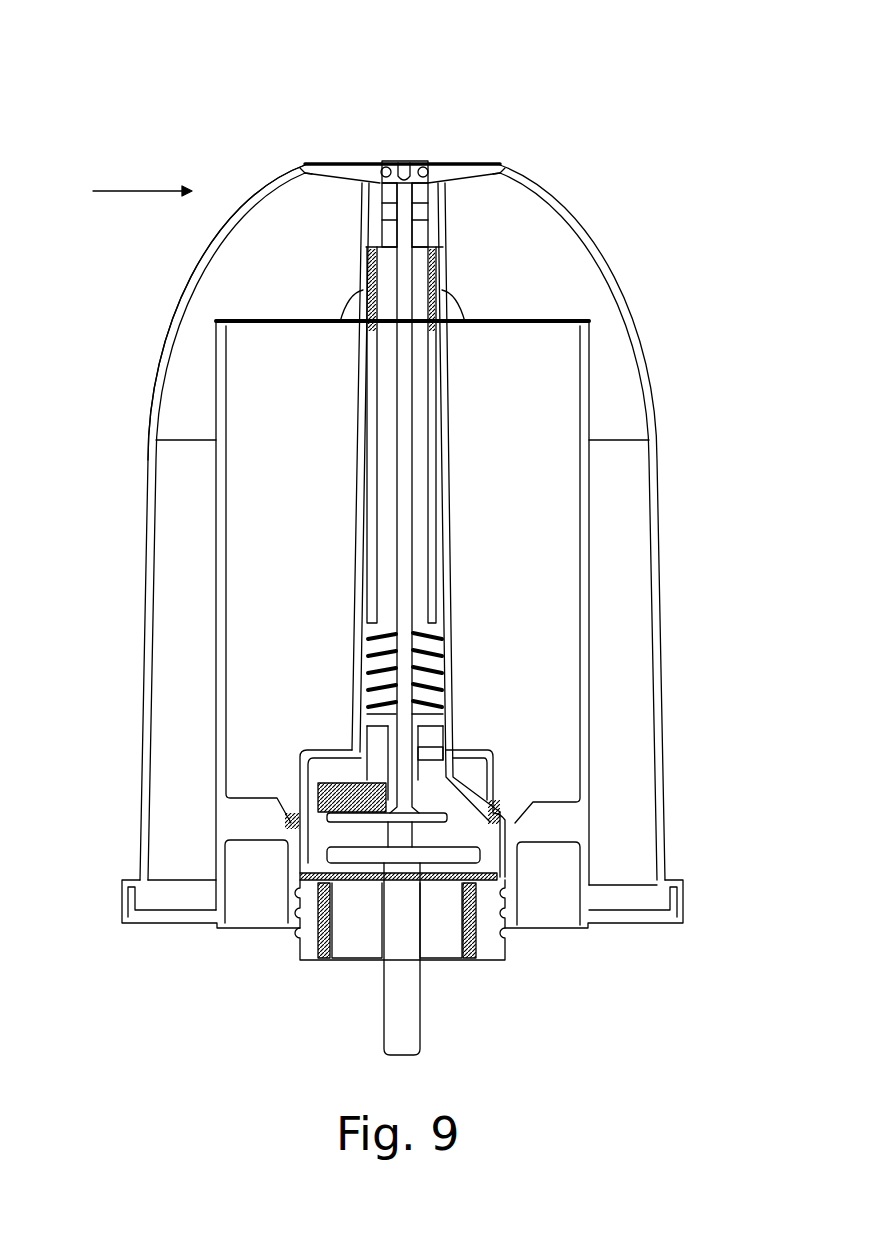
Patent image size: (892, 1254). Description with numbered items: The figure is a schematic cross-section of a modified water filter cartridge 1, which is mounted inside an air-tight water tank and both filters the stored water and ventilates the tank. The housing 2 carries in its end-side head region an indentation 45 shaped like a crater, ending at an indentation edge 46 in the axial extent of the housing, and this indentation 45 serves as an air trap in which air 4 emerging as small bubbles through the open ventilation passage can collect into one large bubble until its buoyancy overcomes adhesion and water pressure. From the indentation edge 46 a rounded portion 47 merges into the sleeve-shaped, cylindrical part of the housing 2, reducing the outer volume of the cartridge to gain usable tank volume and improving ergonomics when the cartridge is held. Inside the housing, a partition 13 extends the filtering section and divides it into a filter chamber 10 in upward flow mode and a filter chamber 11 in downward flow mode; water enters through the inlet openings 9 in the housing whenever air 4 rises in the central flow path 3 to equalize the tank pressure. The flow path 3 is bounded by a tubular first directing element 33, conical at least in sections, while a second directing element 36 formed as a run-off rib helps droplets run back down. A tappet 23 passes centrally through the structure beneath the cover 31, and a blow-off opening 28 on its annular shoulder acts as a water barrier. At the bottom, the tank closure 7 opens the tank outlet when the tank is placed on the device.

The water filter cartridge 1 is at (200, 116).
The housing 2 is at (210, 238).
The flow path 3 is at (464, 374).
The air 4 is at (423, 200).
The tank closure 7 is at (398, 1002).
The inlet openings 9 is at (126, 934).
The filter chamber 10 is at (402, 504).
The filter chamber 11 is at (372, 354).
The partition 13 is at (227, 495).
The tappet 23 is at (406, 488).
The blow-off opening 28 is at (447, 192).
The cover 31 is at (293, 177).
The first directing element 33 is at (443, 425).
The second directing element 36 is at (441, 563).
The indentation 45 is at (371, 154).
The indentation edge 46 is at (304, 163).
The rounded portion 47 is at (178, 296).